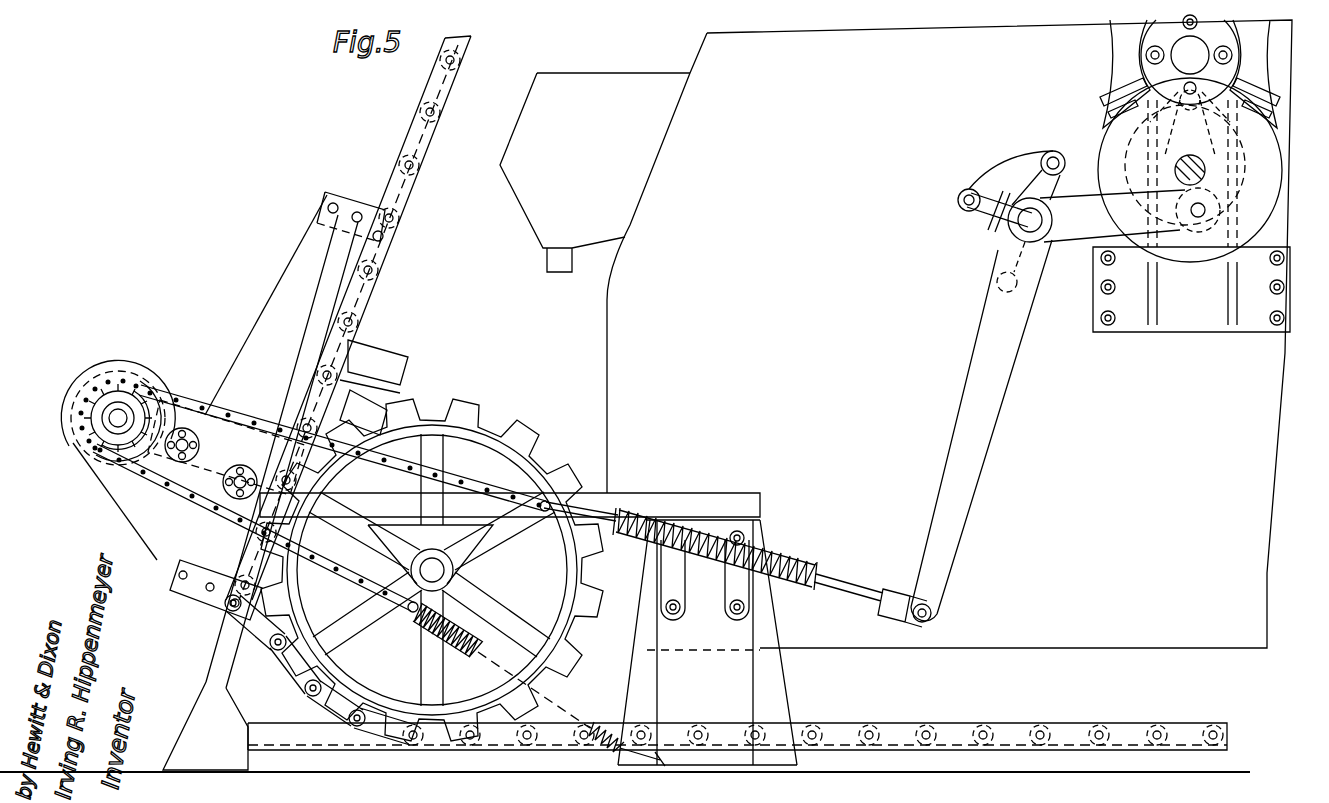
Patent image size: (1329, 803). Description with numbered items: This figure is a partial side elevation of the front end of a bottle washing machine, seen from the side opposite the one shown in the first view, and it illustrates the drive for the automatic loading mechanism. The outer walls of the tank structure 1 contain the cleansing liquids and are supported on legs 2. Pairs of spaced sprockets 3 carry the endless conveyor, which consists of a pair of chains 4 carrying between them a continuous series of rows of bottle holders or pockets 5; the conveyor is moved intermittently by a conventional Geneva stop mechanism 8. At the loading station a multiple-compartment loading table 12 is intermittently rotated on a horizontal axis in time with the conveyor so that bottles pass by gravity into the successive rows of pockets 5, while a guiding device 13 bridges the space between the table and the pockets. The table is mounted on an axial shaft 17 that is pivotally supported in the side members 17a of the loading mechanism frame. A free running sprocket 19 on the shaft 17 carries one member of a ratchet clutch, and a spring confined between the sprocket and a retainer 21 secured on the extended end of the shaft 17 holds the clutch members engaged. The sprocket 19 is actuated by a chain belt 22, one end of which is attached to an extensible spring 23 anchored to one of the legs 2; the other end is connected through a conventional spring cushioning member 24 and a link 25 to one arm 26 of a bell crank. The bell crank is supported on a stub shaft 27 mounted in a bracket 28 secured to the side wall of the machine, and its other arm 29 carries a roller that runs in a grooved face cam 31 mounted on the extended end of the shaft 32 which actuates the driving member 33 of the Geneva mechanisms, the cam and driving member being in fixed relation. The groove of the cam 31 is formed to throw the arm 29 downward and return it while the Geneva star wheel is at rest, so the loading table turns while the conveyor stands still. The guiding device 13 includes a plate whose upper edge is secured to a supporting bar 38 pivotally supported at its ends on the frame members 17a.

The outer walls of tank structure 1 is at (618, 323).
The legs 2 is at (775, 690).
The sprockets 3 is at (528, 420).
The chains 4 is at (416, 142).
The bottle holders or pockets 5 is at (400, 362).
The Geneva stop mechanism 8 is at (1092, 65).
The loading table 12 is at (126, 356).
The guiding device 13 is at (232, 430).
The axial shaft 17 is at (113, 417).
The side members of frame structure 17a is at (178, 560).
The free running sprocket 19 is at (120, 440).
The retainer 21 is at (118, 432).
The chain belt 22 is at (470, 486).
The extensible spring 23 is at (425, 617).
The spring cushioning member 24 is at (782, 566).
The link 25 is at (850, 598).
The arm of bell crank 26 is at (965, 472).
The stub shaft 27 is at (1010, 216).
The bracket 28 is at (1003, 198).
The arm of bell crank 29 is at (1078, 232).
The grooved face cam 31 is at (1127, 136).
The shaft 32 is at (1190, 170).
The driving member 33 is at (1133, 157).
The supporting bar 38 is at (211, 463).